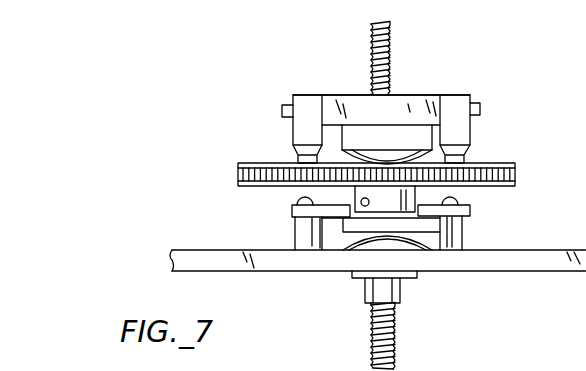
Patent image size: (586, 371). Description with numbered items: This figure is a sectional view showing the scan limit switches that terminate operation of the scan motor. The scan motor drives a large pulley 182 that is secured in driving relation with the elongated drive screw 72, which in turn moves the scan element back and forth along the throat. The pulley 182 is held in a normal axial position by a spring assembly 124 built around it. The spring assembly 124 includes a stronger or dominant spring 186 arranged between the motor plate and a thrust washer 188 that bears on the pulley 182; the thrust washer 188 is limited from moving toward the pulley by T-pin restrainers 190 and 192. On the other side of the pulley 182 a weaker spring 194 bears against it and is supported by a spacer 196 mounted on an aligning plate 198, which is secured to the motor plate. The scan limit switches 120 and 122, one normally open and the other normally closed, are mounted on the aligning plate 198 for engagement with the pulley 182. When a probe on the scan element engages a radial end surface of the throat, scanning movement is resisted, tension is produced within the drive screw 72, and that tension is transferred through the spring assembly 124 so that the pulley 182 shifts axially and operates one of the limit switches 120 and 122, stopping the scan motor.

The drive screw 72 is at (408, 320).
The limit switch 120 is at (463, 105).
The limit switch 122 is at (298, 122).
The spring assembly 124 is at (232, 205).
The large pulley 182 is at (497, 162).
The dominant spring 186 is at (422, 241).
The thrust washer 188 is at (445, 214).
The T-pin restrainer 190 is at (289, 227).
The T-pin restrainer 192 is at (468, 230).
The weaker spring 194 is at (413, 148).
The spacer 196 is at (406, 127).
The aligning plate 198 is at (337, 100).